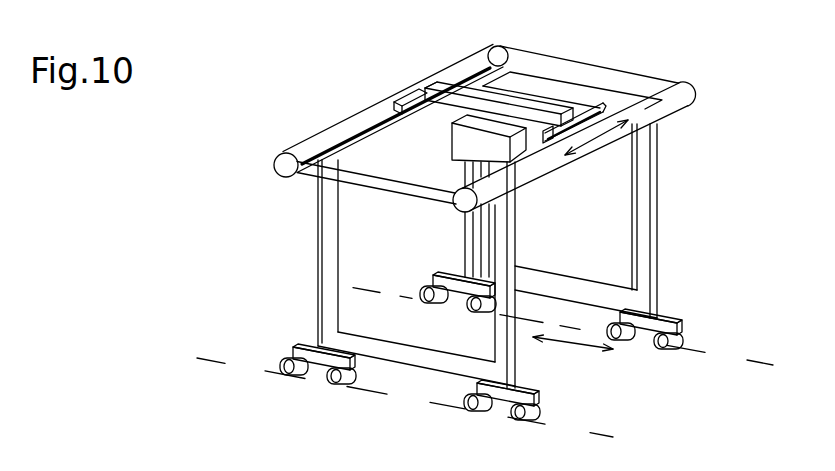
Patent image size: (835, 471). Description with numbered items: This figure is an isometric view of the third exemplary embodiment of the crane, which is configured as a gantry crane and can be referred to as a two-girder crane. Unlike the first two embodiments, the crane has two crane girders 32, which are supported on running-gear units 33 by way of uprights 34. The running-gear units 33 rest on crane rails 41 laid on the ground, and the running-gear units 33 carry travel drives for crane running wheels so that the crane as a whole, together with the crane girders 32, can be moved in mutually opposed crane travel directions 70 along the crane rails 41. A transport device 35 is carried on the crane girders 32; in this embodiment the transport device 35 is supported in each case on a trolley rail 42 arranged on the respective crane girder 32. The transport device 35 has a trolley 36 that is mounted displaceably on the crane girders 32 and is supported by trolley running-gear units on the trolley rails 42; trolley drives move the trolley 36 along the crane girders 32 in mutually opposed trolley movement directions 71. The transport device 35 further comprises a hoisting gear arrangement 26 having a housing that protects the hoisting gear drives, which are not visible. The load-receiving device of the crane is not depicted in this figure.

The hoisting gear arrangement 26 is at (463, 145).
The crane girder 32 is at (367, 122).
The running-gear units 33 is at (663, 325).
The uprights 34 is at (498, 248).
The transport device 35 is at (538, 92).
The trolley 36 is at (480, 103).
The crane rails 41 is at (500, 363).
The trolley rail 42 is at (488, 68).
The crane travel directions 70 is at (570, 342).
The trolley movement directions 71 is at (593, 140).